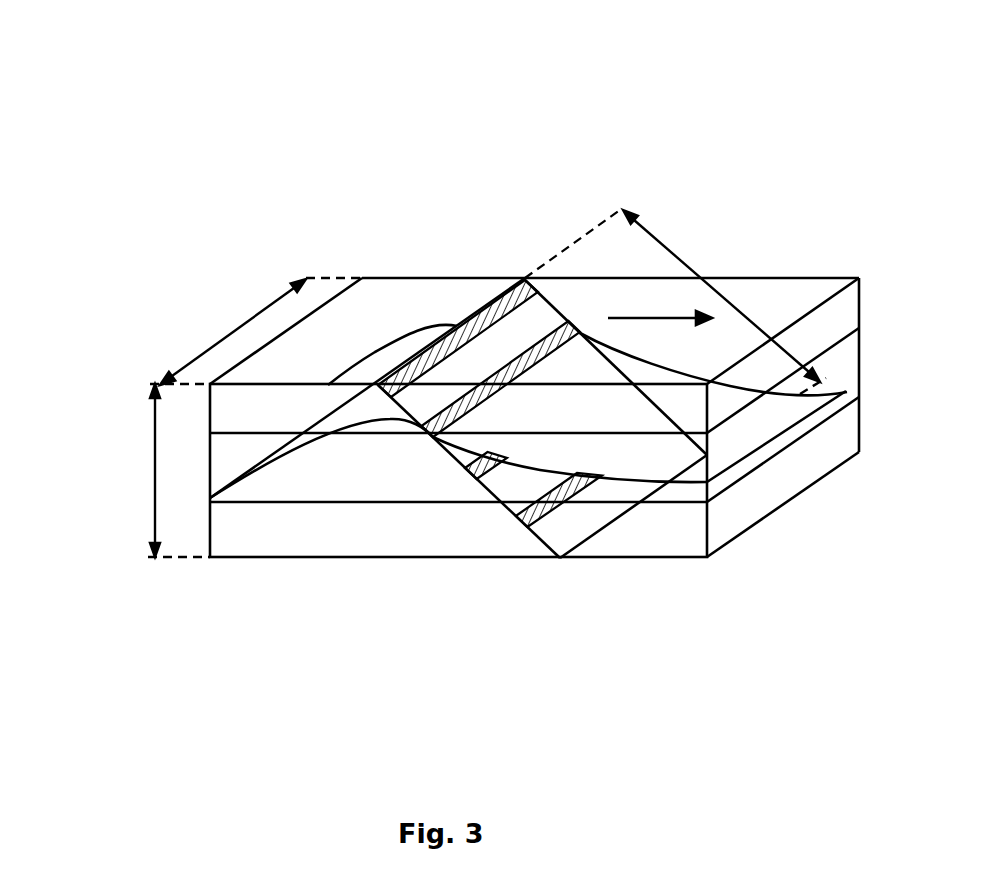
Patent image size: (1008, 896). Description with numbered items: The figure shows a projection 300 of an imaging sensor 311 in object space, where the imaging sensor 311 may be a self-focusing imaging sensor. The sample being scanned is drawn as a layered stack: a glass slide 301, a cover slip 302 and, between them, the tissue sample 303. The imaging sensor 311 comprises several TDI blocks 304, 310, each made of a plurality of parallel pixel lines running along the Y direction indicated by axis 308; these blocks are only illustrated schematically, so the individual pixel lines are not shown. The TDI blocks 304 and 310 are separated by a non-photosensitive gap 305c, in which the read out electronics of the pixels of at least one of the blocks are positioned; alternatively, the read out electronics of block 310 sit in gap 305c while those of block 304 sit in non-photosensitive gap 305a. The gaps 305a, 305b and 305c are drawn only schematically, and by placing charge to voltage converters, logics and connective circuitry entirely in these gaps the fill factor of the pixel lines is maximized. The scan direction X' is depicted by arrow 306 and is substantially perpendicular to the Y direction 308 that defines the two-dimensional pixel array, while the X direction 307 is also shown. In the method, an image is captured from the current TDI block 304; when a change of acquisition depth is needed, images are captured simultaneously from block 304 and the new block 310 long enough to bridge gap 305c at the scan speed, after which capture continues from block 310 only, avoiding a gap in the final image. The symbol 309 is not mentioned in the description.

The projection of an imaging sensor 300 is at (510, 130).
The glass slide 301 is at (276, 541).
The cover slip 302 is at (272, 404).
The tissue sample 303 is at (572, 407).
The TDI block 304 is at (502, 488).
The non-photosensitive gap 305a is at (468, 470).
The non-photosensitive gap 305b is at (497, 303).
The non-photosensitive gap 305c is at (525, 537).
The arrow 306 is at (660, 318).
The X direction 307 is at (645, 218).
The axis 308 is at (249, 314).
The z-dimension 309 is at (152, 385).
The TDI block 310 is at (563, 530).
The imaging sensor 311 is at (633, 505).